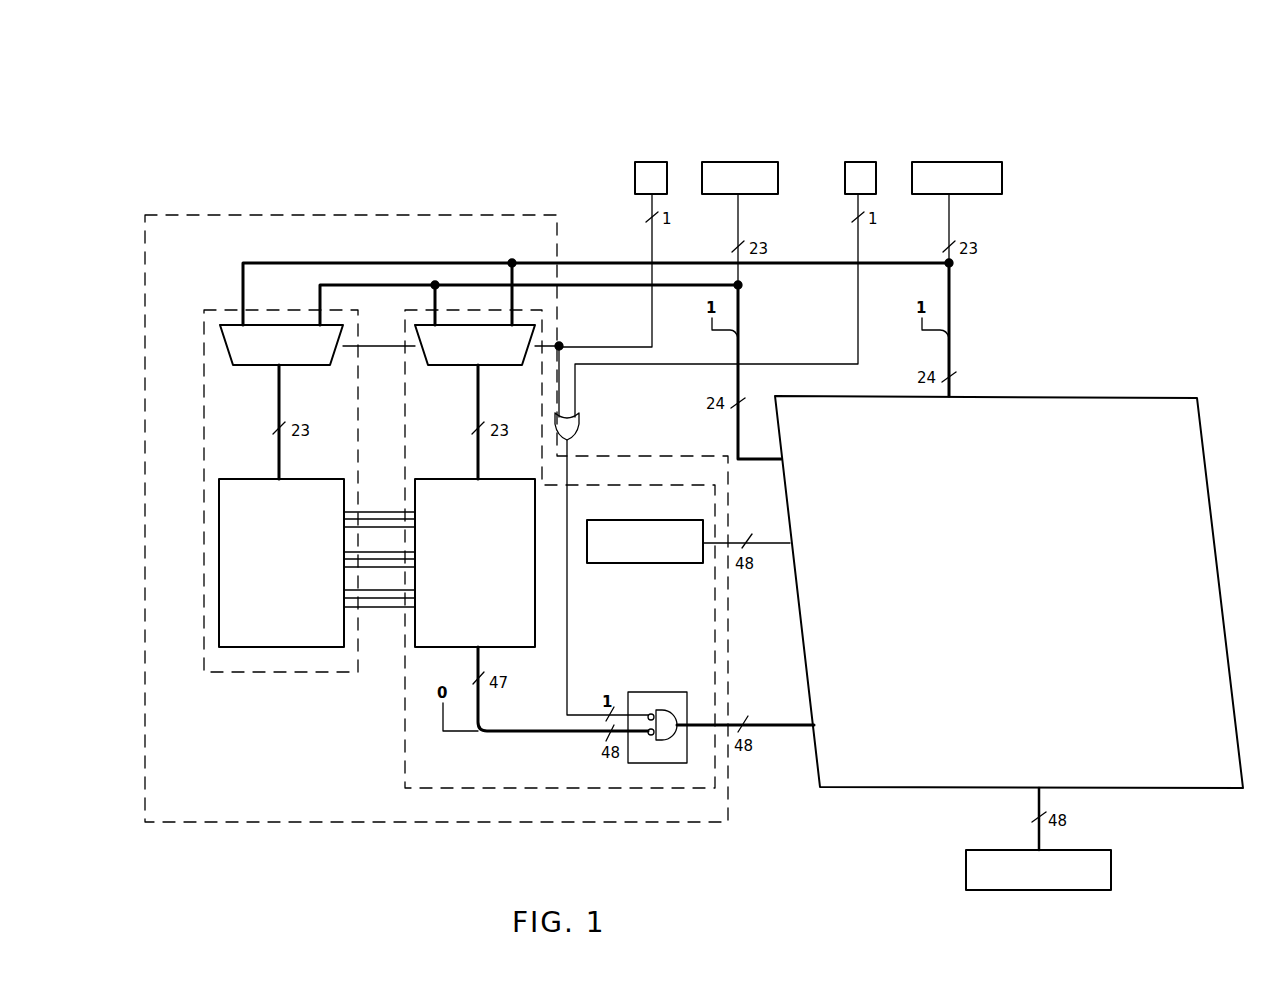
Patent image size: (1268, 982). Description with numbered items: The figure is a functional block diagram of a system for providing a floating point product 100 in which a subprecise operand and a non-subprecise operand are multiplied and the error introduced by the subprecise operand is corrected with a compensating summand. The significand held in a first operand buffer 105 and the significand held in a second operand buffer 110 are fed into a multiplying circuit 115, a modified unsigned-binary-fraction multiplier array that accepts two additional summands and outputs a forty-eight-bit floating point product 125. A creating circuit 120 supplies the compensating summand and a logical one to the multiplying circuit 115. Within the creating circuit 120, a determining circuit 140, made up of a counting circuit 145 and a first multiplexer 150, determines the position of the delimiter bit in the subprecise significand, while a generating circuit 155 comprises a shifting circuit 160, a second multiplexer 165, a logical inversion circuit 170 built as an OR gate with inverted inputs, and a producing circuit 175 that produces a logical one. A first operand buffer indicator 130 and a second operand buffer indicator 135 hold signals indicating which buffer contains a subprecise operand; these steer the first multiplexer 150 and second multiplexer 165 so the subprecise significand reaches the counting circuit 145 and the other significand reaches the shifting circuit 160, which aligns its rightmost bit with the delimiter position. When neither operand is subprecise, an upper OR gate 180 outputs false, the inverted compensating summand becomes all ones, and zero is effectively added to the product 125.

The system for providing a floating point product 100 is at (1232, 45).
The first operand buffer 105 is at (760, 162).
The second operand buffer 110 is at (956, 162).
The multiplying circuit 115 is at (1183, 398).
The creating circuit 120 is at (145, 374).
The floating point product 125 is at (1111, 872).
The first operand buffer indicator 130 is at (652, 160).
The second operand buffer indicator 135 is at (860, 160).
The determining circuit 140 is at (204, 547).
The counting circuit 145 is at (290, 479).
The first multiplexer 150 is at (238, 367).
The generating circuit 155 is at (405, 703).
The shifting circuit 160 is at (486, 479).
The second multiplexer 165 is at (433, 367).
The logical inversion circuit 170 is at (643, 692).
The producing circuit 175 is at (640, 563).
The upper OR gate 180 is at (580, 421).